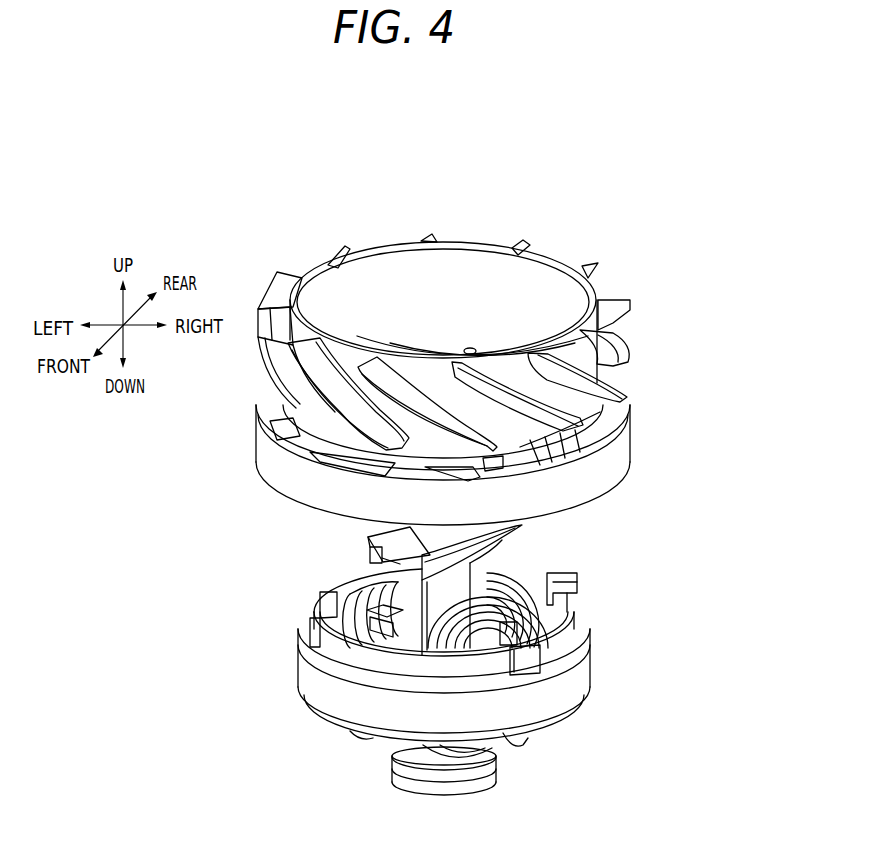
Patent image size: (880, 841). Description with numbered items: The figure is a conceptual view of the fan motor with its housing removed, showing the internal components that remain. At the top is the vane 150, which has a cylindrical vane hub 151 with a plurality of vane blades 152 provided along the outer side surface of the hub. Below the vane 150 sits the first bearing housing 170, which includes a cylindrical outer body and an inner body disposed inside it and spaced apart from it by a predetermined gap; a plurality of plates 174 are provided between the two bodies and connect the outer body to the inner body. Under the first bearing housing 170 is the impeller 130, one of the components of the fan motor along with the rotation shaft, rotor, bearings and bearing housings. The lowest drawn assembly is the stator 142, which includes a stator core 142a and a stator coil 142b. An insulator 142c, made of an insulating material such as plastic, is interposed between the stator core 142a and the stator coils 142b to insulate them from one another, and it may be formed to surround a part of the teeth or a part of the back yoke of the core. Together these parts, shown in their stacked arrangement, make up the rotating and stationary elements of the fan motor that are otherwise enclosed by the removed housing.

The vane 150 is at (508, 357).
The vane hub 151 is at (718, 437).
The vane blades 152 is at (620, 398).
The first bearing housing 170 is at (598, 475).
The plates 174 is at (597, 437).
The impeller 130 is at (483, 538).
The stator 142 is at (380, 680).
The stator core 142a is at (310, 673).
The stator coil 142b is at (310, 615).
The insulator 142c is at (333, 574).